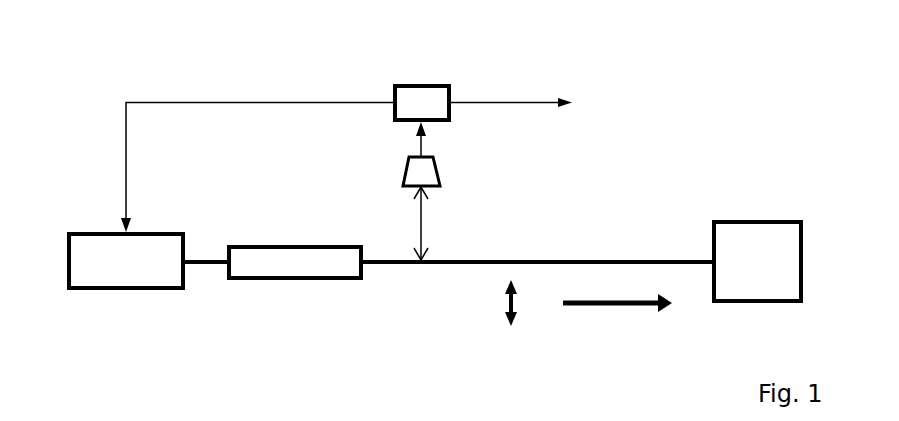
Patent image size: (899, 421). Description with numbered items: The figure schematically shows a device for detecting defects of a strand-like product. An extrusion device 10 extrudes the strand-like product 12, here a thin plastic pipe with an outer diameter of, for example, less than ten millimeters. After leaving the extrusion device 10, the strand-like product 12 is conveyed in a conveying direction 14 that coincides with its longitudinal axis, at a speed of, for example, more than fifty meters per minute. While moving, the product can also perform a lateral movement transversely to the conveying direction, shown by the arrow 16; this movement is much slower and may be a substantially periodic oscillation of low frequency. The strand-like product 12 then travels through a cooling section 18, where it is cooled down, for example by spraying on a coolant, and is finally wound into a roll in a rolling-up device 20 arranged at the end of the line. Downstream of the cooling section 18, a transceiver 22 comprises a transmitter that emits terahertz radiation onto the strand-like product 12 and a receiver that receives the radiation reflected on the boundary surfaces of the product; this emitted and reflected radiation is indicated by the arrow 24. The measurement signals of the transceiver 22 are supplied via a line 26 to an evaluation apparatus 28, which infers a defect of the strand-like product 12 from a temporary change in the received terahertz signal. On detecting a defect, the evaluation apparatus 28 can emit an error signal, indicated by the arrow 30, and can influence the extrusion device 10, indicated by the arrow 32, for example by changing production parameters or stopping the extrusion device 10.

The extrusion device 10 is at (130, 275).
The strand-like product 12 is at (615, 260).
The conveying direction 14 is at (613, 305).
The arrow 16 is at (507, 303).
The cooling section 18 is at (298, 267).
The rolling-up device 20 is at (750, 237).
The transceiver 22 is at (423, 173).
The arrow 24 is at (423, 225).
The line 26 is at (419, 140).
The evaluation apparatus 28 is at (417, 97).
The arrow 30 is at (512, 100).
The arrow 32 is at (253, 102).